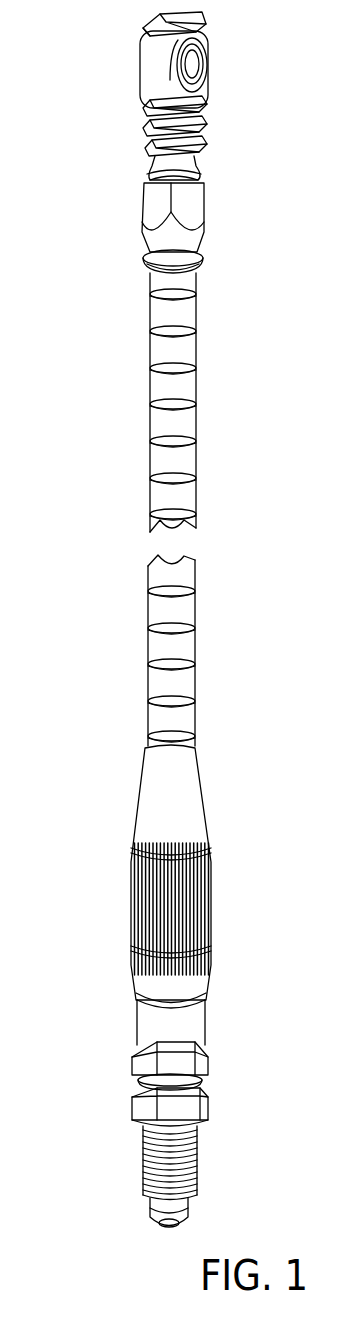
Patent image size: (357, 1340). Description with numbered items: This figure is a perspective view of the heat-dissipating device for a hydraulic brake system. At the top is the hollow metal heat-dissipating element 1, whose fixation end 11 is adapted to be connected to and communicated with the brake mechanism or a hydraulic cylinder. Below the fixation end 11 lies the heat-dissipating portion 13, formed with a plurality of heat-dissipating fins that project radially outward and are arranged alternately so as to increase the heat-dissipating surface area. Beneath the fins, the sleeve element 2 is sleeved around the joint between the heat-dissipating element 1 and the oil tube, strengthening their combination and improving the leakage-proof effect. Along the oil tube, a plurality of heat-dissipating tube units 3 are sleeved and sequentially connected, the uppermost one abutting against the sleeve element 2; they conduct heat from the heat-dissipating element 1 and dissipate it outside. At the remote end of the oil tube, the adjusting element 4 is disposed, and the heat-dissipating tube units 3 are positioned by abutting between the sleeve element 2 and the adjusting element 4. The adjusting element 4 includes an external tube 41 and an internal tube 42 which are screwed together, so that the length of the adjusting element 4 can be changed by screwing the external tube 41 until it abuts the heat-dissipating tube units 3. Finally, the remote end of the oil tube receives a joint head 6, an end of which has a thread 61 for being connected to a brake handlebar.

The heat-dissipating element 1 is at (116, 134).
The fixation end 11 is at (197, 64).
The heat-dissipating portion 13 is at (192, 144).
The sleeve element 2 is at (157, 202).
The heat-dissipating tube unit 3 is at (158, 393).
The adjusting element 4 is at (116, 887).
The external tube 41 is at (150, 784).
The internal tube 42 is at (192, 1024).
The joint head 6 is at (119, 1108).
The thread 61 is at (196, 1145).